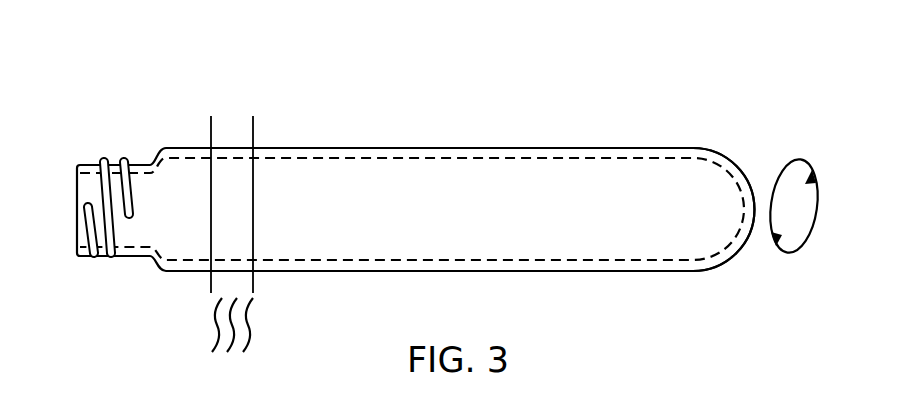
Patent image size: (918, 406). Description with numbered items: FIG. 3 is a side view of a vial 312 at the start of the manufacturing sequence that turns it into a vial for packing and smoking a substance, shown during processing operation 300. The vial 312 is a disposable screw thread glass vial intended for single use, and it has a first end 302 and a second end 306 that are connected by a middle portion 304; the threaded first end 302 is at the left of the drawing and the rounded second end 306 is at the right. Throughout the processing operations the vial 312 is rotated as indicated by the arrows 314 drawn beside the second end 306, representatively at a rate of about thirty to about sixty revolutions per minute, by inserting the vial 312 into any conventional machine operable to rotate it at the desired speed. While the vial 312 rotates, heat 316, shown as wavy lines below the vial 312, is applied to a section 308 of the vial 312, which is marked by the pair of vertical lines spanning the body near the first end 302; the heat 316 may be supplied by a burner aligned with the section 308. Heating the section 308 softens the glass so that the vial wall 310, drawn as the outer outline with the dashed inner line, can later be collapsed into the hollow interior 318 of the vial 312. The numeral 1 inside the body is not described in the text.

The processing operation 300 is at (739, 57).
The first end 302 is at (71, 161).
The middle portion 304 is at (459, 133).
The second end 306 is at (743, 159).
The section 308 is at (211, 116).
The vial wall 310 is at (563, 147).
The vial 312 is at (667, 146).
The arrows 314 is at (795, 254).
The heat 316 is at (208, 321).
The hollow interior 318 is at (465, 222).
The indicator 1 is at (657, 208).